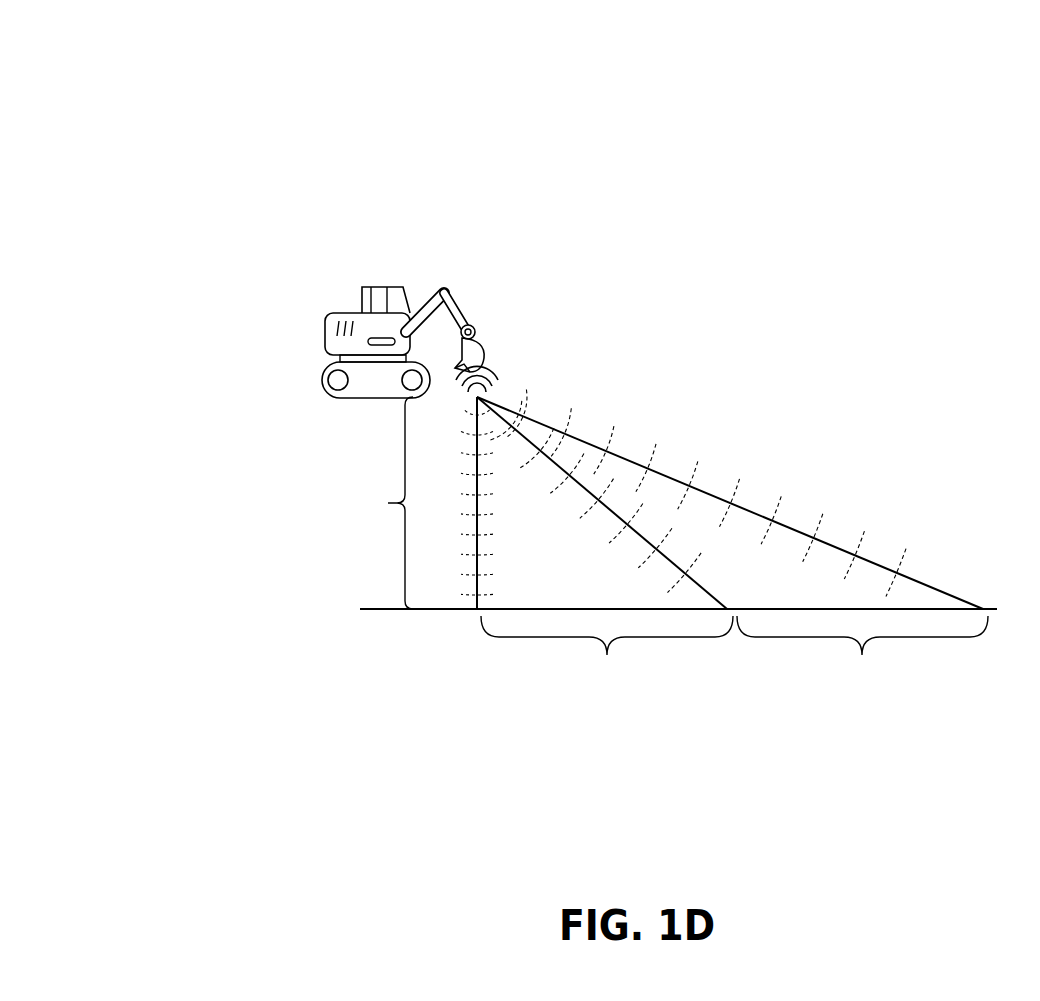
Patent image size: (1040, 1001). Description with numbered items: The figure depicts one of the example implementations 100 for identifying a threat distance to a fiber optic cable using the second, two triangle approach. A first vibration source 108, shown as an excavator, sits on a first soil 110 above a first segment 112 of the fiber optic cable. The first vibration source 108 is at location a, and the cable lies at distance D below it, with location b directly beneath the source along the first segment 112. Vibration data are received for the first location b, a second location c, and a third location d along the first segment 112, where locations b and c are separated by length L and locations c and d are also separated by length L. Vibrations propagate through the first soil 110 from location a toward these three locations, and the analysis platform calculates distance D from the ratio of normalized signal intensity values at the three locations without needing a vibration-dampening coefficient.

The example implementations 100 is at (122, 44).
The first vibration source 108 is at (363, 309).
The first soil 110 is at (656, 518).
The first segment 112 is at (599, 639).